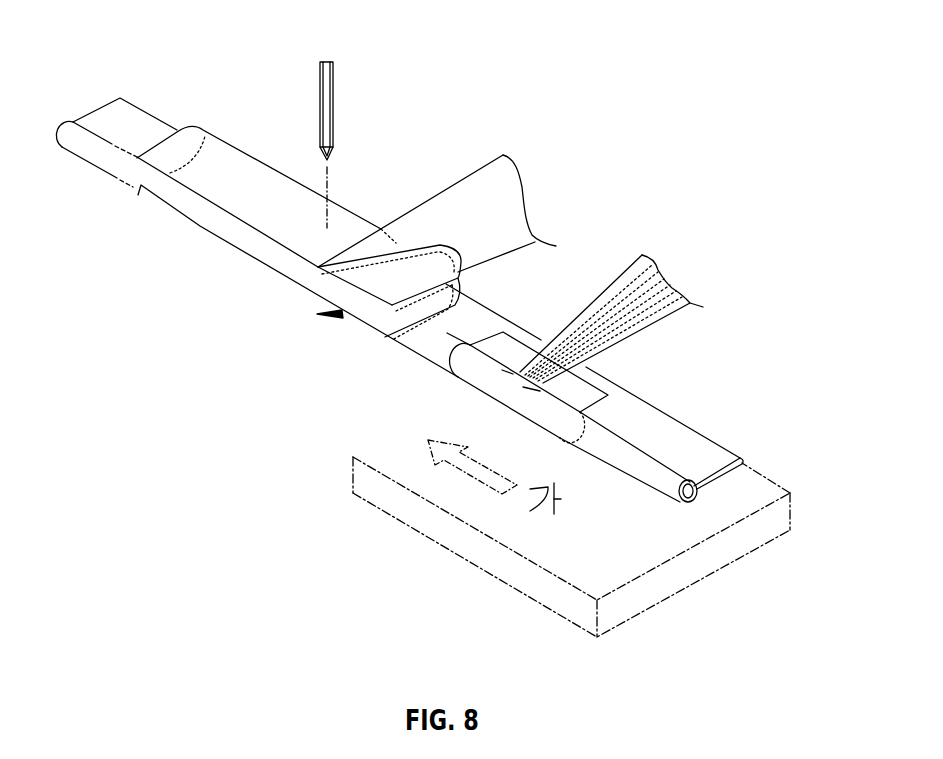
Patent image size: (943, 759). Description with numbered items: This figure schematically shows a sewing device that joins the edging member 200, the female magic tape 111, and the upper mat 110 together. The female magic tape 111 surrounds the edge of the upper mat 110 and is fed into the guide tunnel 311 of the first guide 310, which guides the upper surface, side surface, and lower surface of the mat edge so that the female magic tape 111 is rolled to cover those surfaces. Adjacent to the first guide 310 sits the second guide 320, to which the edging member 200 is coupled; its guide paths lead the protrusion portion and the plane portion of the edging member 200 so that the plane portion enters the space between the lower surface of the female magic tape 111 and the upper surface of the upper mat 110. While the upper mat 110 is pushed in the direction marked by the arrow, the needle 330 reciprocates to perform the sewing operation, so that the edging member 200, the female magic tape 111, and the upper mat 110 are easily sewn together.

The upper mat 110 is at (668, 592).
The female magic tape 111 is at (226, 143).
The edging member 200 is at (129, 98).
The first guide 310 is at (510, 193).
The guide tunnel 311 is at (334, 320).
The second guide 320 is at (482, 387).
The needle 330 is at (334, 92).